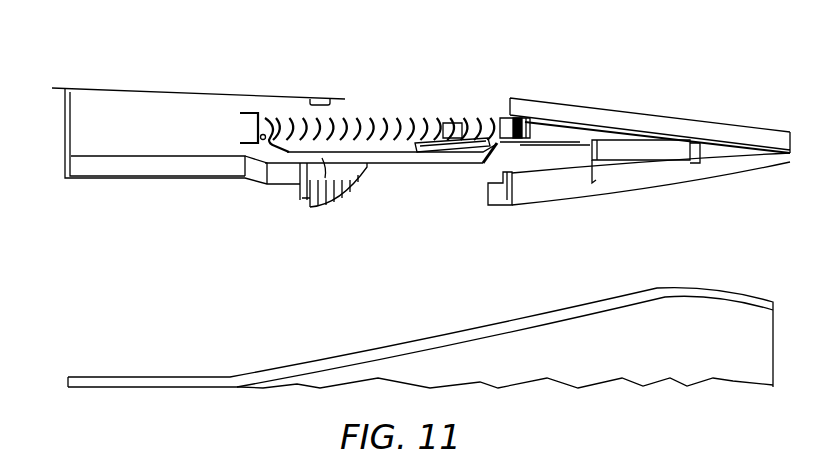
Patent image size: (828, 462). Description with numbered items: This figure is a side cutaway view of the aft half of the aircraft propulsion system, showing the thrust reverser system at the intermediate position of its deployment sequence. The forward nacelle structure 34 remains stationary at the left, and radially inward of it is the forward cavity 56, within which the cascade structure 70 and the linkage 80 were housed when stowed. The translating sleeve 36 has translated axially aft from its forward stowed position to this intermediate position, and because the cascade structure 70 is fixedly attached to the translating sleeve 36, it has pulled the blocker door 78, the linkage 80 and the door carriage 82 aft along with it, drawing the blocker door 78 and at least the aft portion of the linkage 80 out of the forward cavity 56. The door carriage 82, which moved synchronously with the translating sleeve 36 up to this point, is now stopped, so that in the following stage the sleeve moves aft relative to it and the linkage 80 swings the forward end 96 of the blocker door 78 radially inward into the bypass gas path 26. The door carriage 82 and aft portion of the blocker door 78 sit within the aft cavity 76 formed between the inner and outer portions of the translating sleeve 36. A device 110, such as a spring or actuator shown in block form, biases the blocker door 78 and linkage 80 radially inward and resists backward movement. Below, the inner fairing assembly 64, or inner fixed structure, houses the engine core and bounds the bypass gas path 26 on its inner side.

The forward nacelle structure 34 is at (205, 89).
The forward cavity 56 is at (157, 139).
The cascade structure 70 is at (375, 119).
The device 110 is at (448, 122).
The forward end 96 is at (397, 153).
The blocker door 78 is at (437, 160).
The linkage 80 is at (322, 200).
The translating sleeve 36 is at (688, 110).
The door carriage 82 is at (633, 157).
The aft cavity 76 is at (552, 157).
The bypass gas path 26 is at (275, 293).
The inner fairing assembly 64 is at (740, 293).